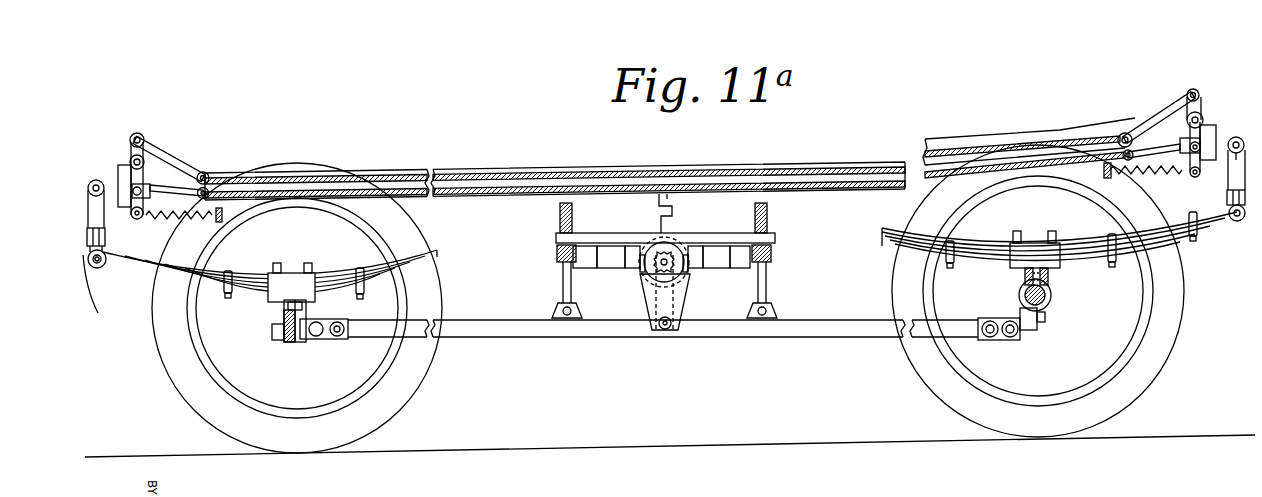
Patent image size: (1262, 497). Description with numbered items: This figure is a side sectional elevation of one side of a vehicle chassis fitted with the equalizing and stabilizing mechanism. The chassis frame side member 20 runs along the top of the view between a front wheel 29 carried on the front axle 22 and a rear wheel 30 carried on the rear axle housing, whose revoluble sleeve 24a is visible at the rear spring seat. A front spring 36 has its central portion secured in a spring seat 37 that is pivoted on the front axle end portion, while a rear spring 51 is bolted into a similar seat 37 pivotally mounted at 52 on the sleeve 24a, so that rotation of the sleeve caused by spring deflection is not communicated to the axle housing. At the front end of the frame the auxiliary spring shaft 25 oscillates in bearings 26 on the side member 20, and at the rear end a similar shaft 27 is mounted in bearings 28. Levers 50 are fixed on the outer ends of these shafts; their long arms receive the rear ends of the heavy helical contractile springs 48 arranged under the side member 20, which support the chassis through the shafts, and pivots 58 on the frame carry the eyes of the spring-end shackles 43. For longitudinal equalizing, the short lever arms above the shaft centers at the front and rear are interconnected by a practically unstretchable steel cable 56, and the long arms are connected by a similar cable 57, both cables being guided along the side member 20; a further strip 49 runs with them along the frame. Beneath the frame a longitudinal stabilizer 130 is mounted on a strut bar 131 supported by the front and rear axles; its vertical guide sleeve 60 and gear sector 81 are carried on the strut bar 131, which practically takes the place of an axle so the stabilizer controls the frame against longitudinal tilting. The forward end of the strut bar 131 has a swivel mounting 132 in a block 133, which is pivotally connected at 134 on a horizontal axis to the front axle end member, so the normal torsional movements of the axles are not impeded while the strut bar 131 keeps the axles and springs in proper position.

The side member 20 is at (555, 173).
The front axle 22 is at (297, 345).
The revoluble sleeve 24a is at (1052, 292).
The auxiliary spring shaft 25 is at (157, 150).
The bearing 26 is at (172, 176).
The rear spring shaft 27 is at (1188, 92).
The bearing 28 is at (1168, 125).
The front wheel 29 is at (190, 390).
The rear wheel 30 is at (932, 363).
The front spring 36 is at (373, 272).
The spring seat 37 is at (293, 287).
The shackle 43 is at (105, 263).
The helical contractile spring 48 is at (192, 212).
The flexible strip 49 is at (232, 207).
The lever 50 is at (138, 219).
The rear spring 51 is at (1073, 252).
The pivotal mounting 52 is at (1023, 273).
The cable 56 is at (1040, 150).
The cable 57 is at (997, 167).
The pulley 58 is at (210, 181).
The guide sleeve 60 is at (672, 235).
The gear sector 81 is at (688, 275).
The longitudinal stabilizer 130 is at (634, 291).
The strut bar 131 is at (602, 323).
The swivel mounting 132 is at (345, 325).
The block 133 is at (325, 340).
The pivotal connection 134 is at (306, 318).